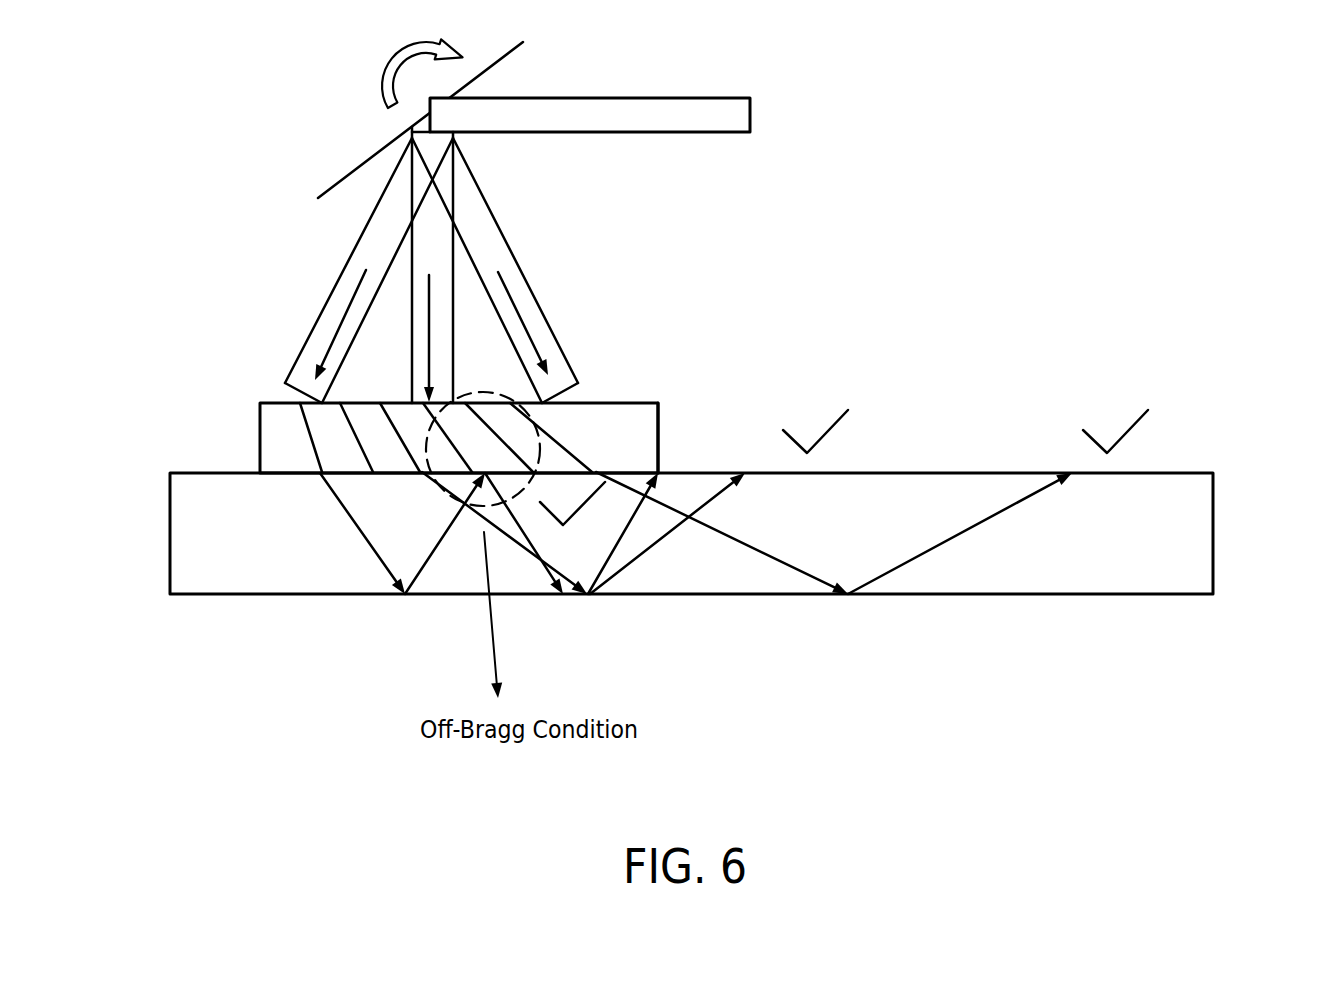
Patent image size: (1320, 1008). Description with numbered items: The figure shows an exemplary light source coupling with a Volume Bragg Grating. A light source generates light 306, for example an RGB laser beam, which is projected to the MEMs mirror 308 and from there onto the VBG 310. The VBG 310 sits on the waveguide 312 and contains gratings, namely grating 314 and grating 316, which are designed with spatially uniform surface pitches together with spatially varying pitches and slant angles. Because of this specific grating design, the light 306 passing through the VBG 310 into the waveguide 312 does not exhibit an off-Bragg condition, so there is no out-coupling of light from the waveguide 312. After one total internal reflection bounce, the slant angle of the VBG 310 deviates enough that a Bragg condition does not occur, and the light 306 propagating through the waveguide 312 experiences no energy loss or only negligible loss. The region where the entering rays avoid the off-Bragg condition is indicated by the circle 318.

The light 306 is at (907, 116).
The MEMs mirror 308 is at (315, 156).
The VBG 310 is at (122, 378).
The waveguide 312 is at (1230, 520).
The grating 314 is at (616, 403).
The grating 316 is at (368, 423).
The circle 318 is at (486, 397).